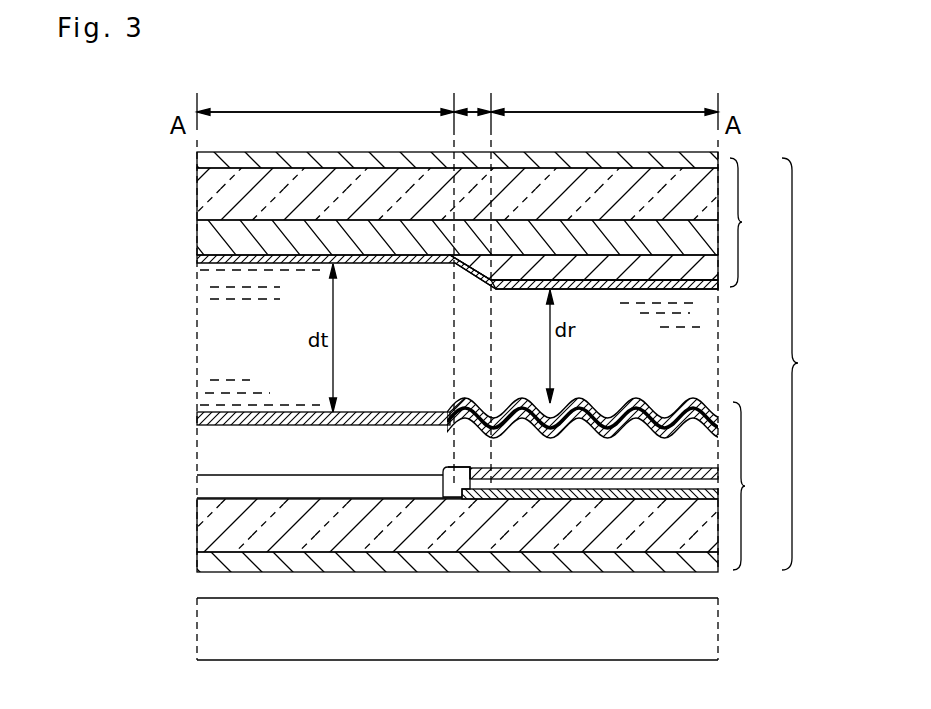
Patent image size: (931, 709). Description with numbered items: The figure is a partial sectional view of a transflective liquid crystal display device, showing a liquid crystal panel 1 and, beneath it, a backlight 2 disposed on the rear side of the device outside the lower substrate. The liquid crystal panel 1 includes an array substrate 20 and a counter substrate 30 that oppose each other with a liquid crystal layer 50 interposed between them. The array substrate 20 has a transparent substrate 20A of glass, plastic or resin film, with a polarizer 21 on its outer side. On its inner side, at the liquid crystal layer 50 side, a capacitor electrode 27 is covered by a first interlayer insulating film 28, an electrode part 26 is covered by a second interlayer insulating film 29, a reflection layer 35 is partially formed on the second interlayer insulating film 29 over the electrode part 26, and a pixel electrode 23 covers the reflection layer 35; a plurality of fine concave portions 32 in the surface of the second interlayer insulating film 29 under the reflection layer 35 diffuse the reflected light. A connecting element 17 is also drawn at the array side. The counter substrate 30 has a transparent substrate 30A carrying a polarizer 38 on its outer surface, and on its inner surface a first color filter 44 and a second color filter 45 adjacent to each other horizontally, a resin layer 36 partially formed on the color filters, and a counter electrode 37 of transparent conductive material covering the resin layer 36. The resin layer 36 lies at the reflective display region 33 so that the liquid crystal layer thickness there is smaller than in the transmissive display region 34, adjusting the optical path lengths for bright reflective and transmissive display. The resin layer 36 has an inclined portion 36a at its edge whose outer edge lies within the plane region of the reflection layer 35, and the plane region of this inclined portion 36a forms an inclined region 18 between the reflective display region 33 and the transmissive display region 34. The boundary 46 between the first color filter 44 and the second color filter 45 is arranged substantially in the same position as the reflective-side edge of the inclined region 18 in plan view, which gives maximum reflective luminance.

The liquid crystal panel 1 is at (806, 376).
The backlight 2 is at (705, 622).
The connecting member 17 is at (440, 478).
The inclined region 18 is at (472, 95).
The array substrate 20 is at (753, 486).
The transparent substrate 20A is at (197, 522).
The polarizer 21 is at (197, 562).
The pixel electrode 23 is at (197, 418).
The electrode part 26 is at (577, 468).
The capacitor electrode 27 is at (452, 468).
The first interlayer insulating film 28 is at (197, 488).
The second interlayer insulating film 29 is at (197, 453).
The counter substrate 30 is at (752, 222).
The transparent substrate 30A is at (197, 190).
The fine concave portions 32 is at (662, 400).
The reflective display region 33 is at (604, 98).
The transmissive display region 34 is at (325, 98).
The reflection layer 35 is at (455, 404).
The resin layer 36 is at (698, 290).
The inclined portion 36a is at (478, 279).
The counter electrode 37 is at (197, 258).
The polarizer 38 is at (197, 160).
The first color filter 44 is at (586, 262).
The second color filter 45 is at (197, 238).
The boundary 46 is at (496, 283).
The liquid crystal layer 50 is at (210, 341).